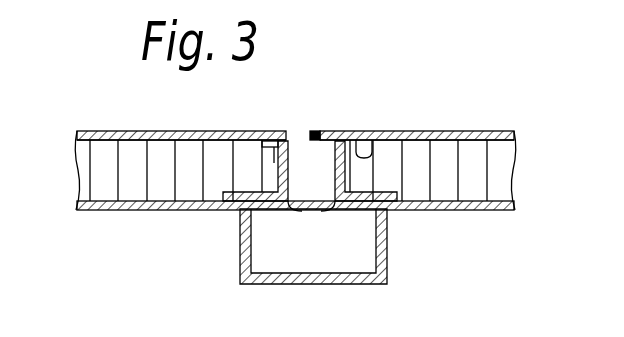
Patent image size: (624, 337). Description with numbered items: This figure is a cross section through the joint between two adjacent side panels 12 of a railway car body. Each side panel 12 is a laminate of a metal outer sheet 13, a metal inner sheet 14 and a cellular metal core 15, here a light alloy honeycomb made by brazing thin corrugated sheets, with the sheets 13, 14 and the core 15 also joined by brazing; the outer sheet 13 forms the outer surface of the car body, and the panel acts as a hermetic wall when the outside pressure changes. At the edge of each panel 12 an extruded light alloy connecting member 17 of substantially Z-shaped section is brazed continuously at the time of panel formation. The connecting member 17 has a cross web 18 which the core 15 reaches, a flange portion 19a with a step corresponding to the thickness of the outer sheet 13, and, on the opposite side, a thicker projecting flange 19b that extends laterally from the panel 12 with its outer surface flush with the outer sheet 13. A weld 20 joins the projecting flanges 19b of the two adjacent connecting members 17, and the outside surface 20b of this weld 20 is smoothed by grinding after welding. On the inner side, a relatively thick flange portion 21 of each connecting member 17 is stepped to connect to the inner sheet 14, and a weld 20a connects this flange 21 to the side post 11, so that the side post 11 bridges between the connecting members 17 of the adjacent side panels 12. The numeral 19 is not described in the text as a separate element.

The side post 11 is at (383, 284).
The side panel 12 is at (85, 131).
The outer sheet 13 is at (107, 131).
The inner sheet 14 is at (133, 210).
The cellular metal core 15 is at (93, 173).
The connecting member 17 is at (278, 162).
The cross web 18 is at (307, 212).
The insert 19 is at (392, 131).
The flange portion 19a is at (268, 141).
The projecting flange 19b is at (302, 131).
The weld 20 is at (313, 143).
The weld 20a is at (237, 211).
The surface of the weld portion 20b is at (315, 133).
The flange portion 21 is at (272, 211).